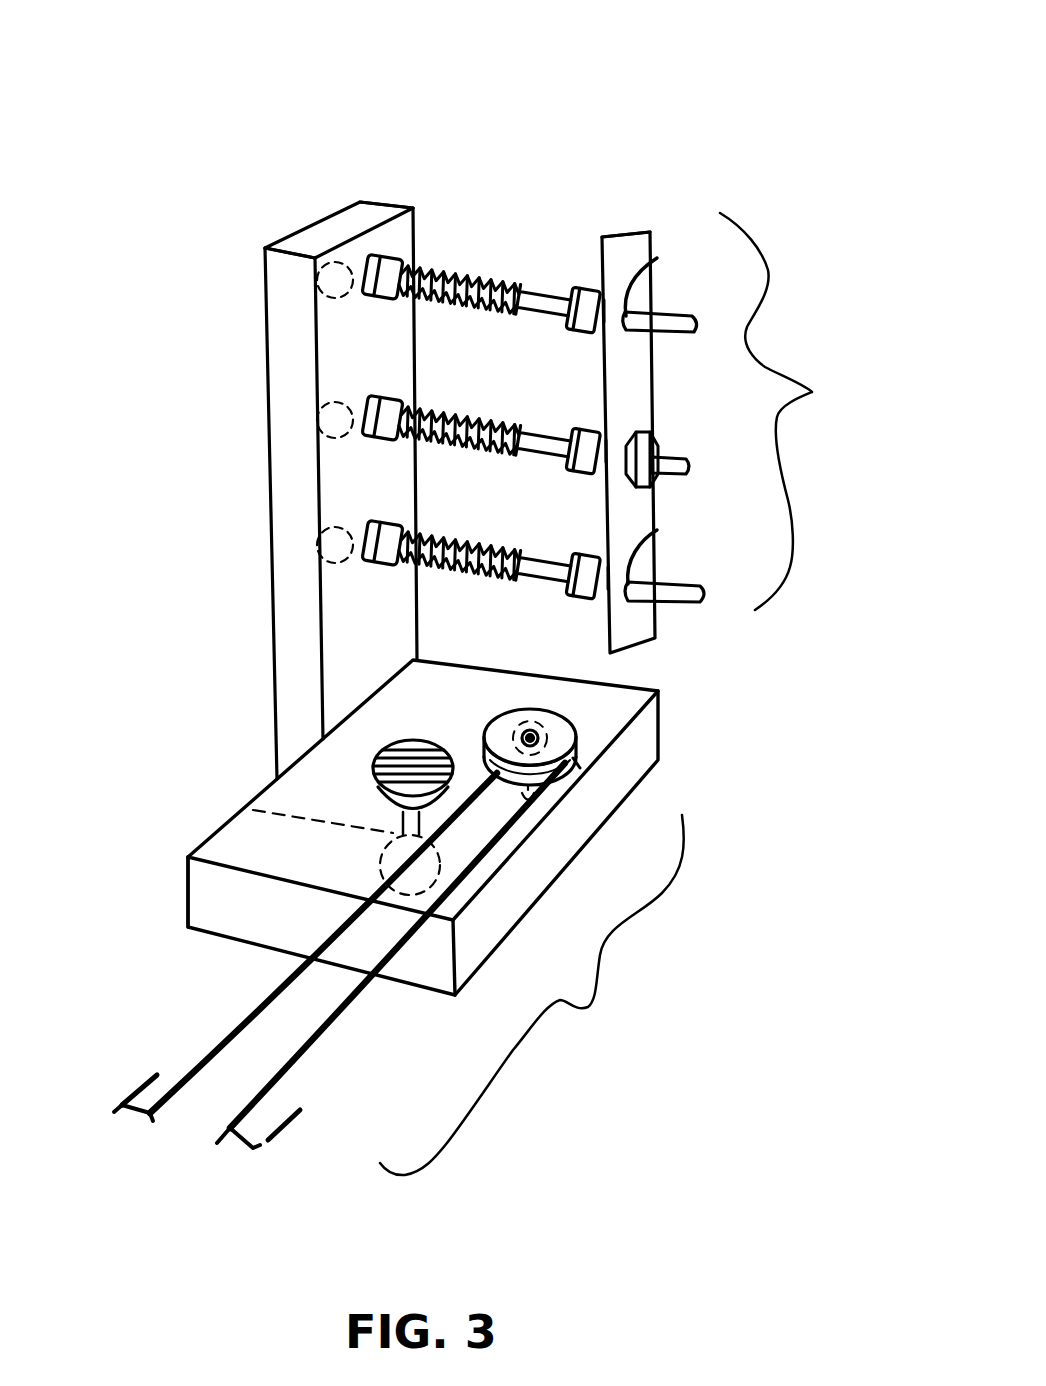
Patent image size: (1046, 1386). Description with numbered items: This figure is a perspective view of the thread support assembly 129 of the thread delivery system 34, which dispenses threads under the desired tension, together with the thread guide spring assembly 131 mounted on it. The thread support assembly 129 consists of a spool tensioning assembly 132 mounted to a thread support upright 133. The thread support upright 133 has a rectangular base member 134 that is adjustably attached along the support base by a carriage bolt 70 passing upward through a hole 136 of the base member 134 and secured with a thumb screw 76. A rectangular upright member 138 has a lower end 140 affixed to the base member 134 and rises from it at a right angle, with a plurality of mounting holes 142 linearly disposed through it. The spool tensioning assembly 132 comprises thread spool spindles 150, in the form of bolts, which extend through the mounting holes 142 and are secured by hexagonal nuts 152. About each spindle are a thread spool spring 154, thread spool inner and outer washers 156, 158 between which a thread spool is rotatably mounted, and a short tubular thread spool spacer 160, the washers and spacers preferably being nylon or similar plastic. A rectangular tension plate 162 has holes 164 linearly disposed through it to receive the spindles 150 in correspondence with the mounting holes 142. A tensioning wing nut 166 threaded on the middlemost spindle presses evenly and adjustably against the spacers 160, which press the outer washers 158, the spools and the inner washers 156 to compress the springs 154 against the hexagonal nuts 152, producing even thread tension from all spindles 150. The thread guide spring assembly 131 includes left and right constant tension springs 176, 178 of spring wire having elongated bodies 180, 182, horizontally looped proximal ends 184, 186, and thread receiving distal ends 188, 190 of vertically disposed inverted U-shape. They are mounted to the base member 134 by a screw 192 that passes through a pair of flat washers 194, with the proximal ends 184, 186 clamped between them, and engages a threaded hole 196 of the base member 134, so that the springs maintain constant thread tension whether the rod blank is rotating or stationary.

The thread delivery system 34 is at (213, 80).
The thread support assembly 129 is at (545, 195).
The thread guide spring assembly 131 is at (532, 995).
The spool tensioning assembly 132 is at (804, 411).
The thread support upright 133 is at (160, 755).
The base member 134 is at (185, 905).
The hole 136 is at (240, 810).
The upright member 138 is at (262, 493).
The lower end 140 is at (275, 710).
The mounting holes 142 is at (300, 306).
The thread spool spindles 150 is at (690, 313).
The hexagonal nuts 152 is at (393, 263).
The thread spool springs 154 is at (470, 285).
The thread spool inner washers 156 is at (520, 320).
The thread spool outer washers 158 is at (574, 322).
The thread spool spacers 160 is at (590, 287).
The tension plate 162 is at (630, 387).
The holes 164 is at (650, 272).
The tensioning wing nut 166 is at (654, 440).
The carriage bolt 70 is at (380, 865).
The thumb screw 76 is at (375, 784).
The left constant tension spring 176 is at (198, 1003).
The right constant tension spring 178 is at (333, 1033).
The elongated body 180 is at (292, 968).
The elongated body 182 is at (333, 1007).
The proximal end 184 is at (507, 716).
The proximal end 186 is at (584, 734).
The thread receiving distal end 188 is at (126, 1112).
The thread receiving distal end 190 is at (236, 1150).
The screw 192 is at (536, 730).
The flat washers 194 is at (575, 742).
The threaded hole 196 is at (535, 797).